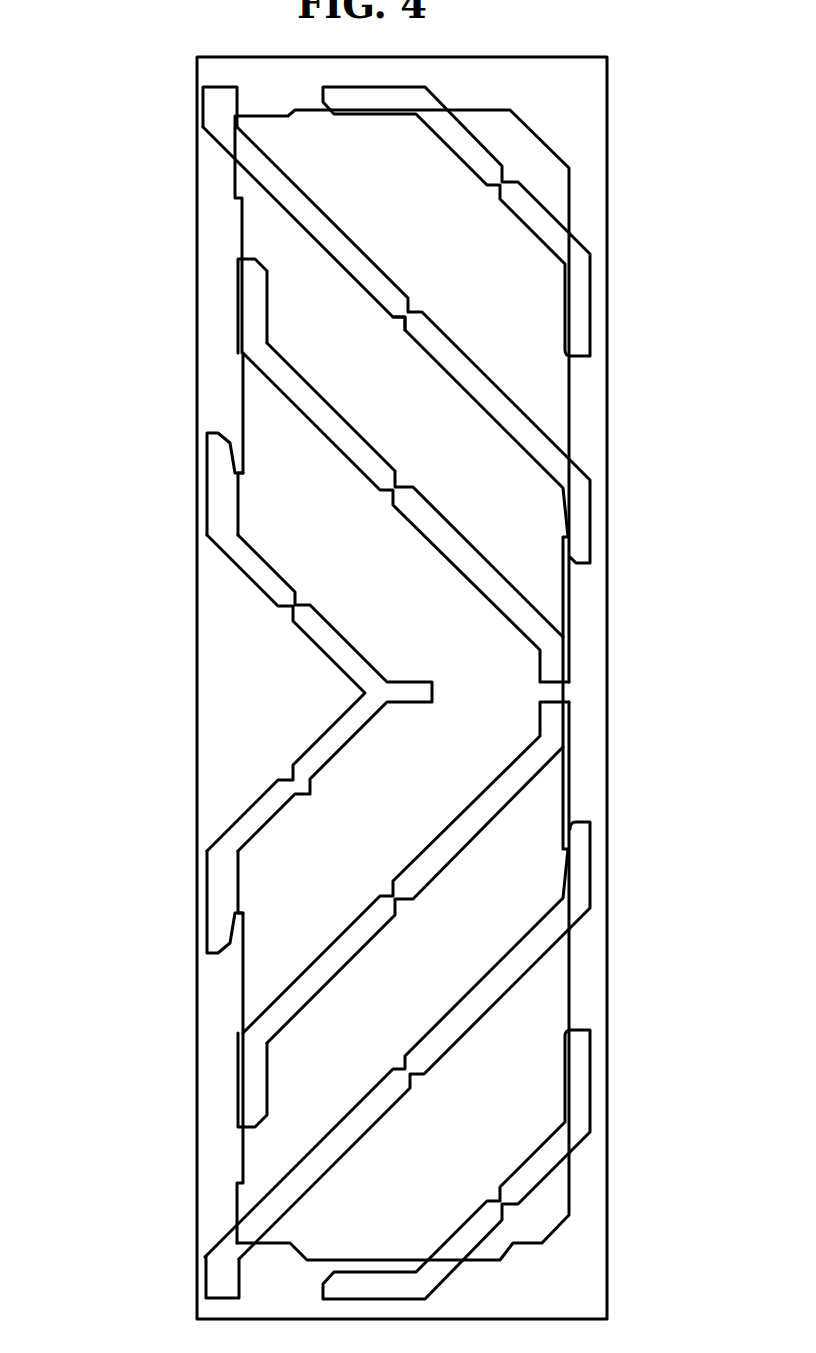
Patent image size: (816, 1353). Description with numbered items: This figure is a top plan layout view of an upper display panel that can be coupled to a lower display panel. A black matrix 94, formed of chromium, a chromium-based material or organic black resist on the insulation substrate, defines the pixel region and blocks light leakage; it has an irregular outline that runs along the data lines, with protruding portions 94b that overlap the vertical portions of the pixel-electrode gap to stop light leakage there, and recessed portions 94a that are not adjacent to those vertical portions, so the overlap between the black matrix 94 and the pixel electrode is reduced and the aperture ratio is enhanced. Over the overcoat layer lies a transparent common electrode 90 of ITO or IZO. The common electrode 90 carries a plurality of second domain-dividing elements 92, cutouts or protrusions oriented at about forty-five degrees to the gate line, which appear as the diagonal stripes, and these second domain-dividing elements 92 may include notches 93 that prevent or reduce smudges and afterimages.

The common electrode 90 is at (483, 293).
The second domain-dividing elements 92 is at (533, 416).
The notch 93 is at (405, 331).
The black matrix 94 is at (78, 369).
The recessed portions 94a is at (240, 584).
The protruding portions 94b is at (240, 366).